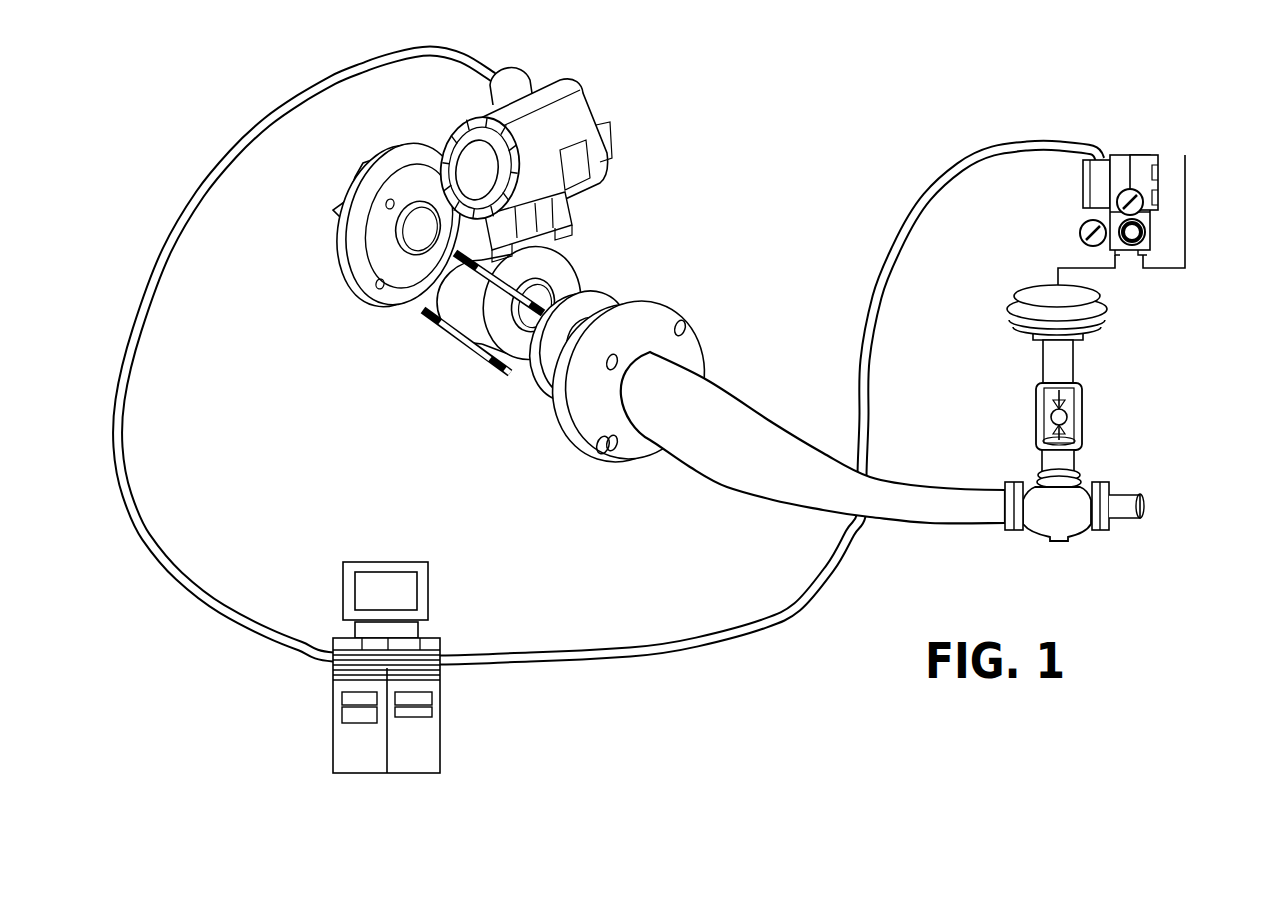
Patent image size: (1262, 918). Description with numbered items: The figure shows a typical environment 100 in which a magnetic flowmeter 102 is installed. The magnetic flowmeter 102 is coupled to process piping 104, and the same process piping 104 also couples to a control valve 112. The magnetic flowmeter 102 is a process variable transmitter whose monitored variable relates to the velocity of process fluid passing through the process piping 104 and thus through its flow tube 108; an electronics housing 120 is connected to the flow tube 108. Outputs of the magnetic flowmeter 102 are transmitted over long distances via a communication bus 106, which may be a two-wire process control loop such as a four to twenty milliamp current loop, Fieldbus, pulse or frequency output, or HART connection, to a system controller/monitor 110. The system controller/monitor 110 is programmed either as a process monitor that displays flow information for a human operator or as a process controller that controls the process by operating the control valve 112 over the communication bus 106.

The environment 100 is at (742, 226).
The magnetic flowmeter 102 is at (382, 372).
The process piping 104 is at (773, 492).
The communication bus 106 is at (141, 338).
The flow tube 108 is at (560, 264).
The system controller/monitor 110 is at (466, 695).
The control valve 112 is at (1095, 370).
The electronics housing 120 is at (573, 122).